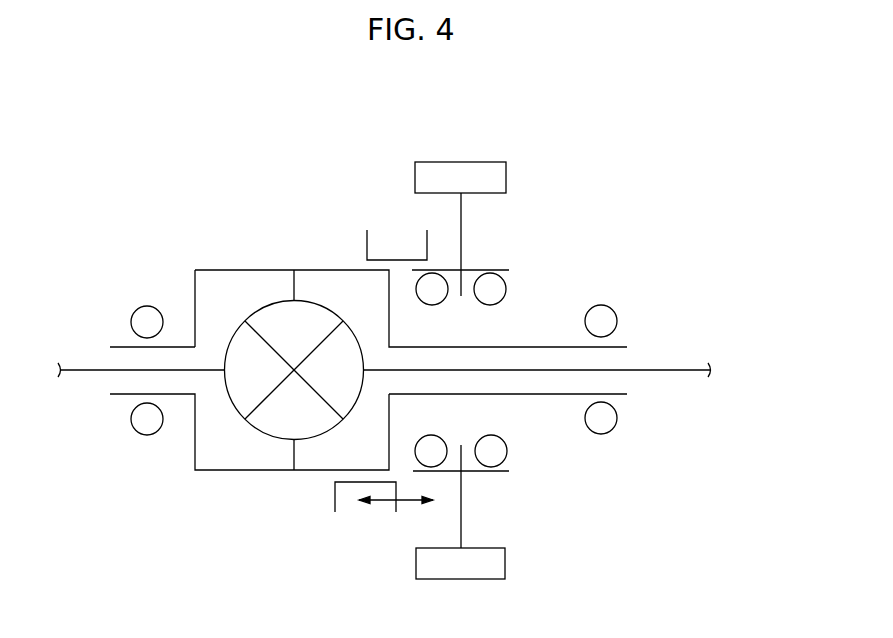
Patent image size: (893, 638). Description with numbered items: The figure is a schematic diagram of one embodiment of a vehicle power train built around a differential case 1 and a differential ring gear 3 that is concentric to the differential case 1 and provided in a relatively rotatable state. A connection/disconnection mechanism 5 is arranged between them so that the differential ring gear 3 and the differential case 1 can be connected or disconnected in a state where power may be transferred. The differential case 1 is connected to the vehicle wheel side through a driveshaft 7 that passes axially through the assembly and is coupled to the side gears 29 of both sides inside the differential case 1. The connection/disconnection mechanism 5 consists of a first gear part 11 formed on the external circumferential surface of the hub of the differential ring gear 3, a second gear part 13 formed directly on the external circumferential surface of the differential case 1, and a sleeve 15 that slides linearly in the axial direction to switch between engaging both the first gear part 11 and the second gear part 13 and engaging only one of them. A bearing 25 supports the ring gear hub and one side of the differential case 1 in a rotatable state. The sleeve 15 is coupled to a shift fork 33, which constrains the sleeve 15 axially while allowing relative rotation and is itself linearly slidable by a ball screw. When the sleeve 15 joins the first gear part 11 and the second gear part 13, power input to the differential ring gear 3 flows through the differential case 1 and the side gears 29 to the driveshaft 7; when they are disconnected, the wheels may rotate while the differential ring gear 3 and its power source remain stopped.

The differential case 1 is at (230, 270).
The differential ring gear 3 is at (466, 172).
The connection/disconnection mechanism 5 is at (388, 230).
The driveshaft 7 is at (92, 368).
The first gear part 11 is at (440, 473).
The second gear part 13 is at (350, 473).
The sleeve 15 is at (365, 242).
The bearing 25 is at (435, 297).
The side gear 29 is at (330, 378).
The shift fork 33 is at (335, 502).